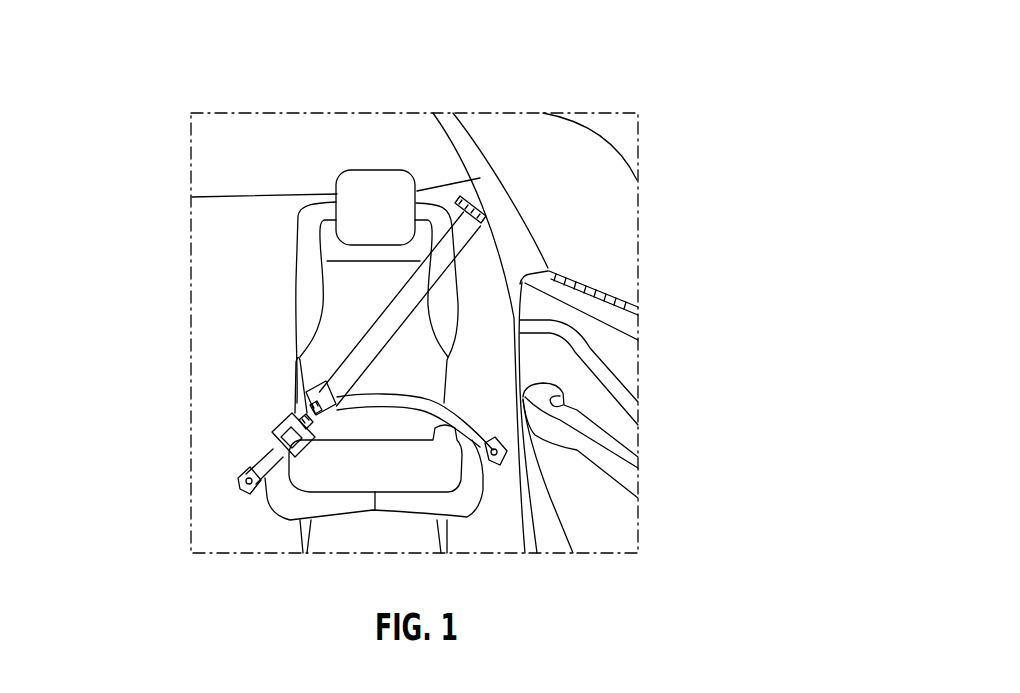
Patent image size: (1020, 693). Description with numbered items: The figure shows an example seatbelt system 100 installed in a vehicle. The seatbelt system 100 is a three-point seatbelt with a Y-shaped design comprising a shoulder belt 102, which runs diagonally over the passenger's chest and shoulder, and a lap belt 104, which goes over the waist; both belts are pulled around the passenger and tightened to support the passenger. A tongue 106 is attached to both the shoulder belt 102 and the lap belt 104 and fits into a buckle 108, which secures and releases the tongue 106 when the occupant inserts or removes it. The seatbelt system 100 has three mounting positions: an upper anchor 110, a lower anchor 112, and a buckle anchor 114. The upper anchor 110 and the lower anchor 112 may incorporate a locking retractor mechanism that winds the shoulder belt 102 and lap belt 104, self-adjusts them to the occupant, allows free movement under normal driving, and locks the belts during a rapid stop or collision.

The seatbelt system 100 is at (697, 81).
The shoulder belt 102 is at (355, 367).
The lap belt 104 is at (425, 403).
The tongue 106 is at (301, 387).
The buckle 108 is at (272, 440).
The upper anchor 110 is at (486, 207).
The lower anchor 112 is at (500, 468).
The buckle anchor 114 is at (238, 492).